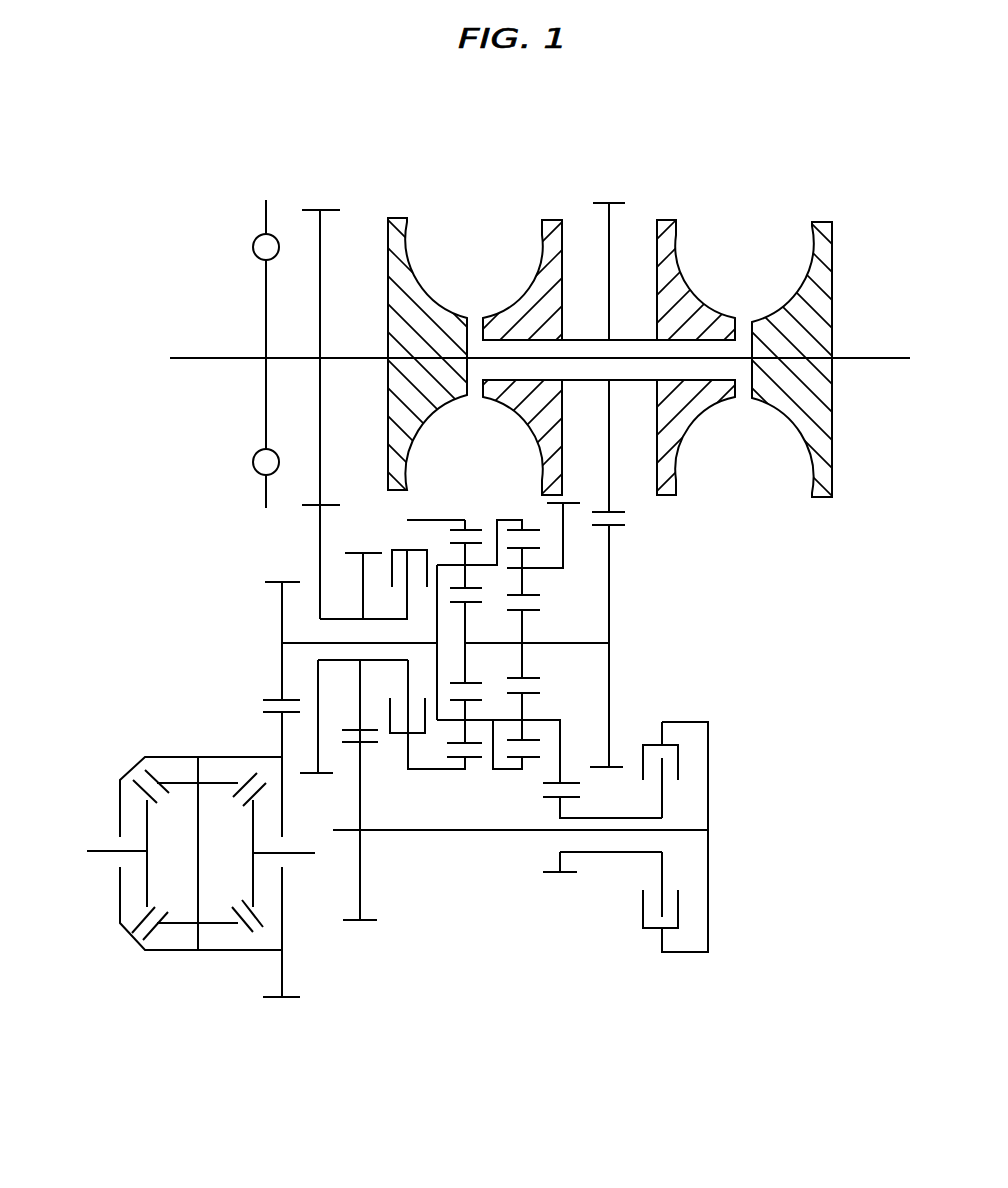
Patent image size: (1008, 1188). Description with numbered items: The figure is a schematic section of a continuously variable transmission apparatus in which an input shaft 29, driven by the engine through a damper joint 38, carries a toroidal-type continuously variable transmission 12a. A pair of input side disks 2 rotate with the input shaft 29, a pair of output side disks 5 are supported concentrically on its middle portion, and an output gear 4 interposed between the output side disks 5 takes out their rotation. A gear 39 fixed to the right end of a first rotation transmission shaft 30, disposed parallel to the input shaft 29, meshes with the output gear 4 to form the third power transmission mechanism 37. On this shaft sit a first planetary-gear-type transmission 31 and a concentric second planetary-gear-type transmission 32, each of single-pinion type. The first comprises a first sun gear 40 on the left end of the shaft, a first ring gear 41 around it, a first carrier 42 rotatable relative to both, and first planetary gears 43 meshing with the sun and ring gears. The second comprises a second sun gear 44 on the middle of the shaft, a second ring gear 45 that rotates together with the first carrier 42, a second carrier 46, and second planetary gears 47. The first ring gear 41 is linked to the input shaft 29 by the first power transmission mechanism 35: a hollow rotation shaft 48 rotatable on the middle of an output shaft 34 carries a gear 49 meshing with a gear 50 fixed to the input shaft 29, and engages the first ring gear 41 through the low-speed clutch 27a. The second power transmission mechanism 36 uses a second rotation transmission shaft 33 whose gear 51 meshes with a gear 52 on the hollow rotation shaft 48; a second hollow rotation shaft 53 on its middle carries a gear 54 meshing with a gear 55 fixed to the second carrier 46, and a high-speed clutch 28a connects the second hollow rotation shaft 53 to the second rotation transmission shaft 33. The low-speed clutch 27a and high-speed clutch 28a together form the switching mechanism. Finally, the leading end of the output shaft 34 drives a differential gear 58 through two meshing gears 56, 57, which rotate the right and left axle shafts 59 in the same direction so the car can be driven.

The input side disk 2 is at (410, 297).
The output gear 4 is at (600, 203).
The output side disk 5 is at (548, 233).
The toroidal-type continuously variable transmission 12a is at (788, 232).
The low-speed clutch 27a is at (390, 740).
The high-speed clutch 28a is at (680, 763).
The input shaft 29 is at (355, 357).
The first rotation transmission shaft 30 is at (577, 643).
The first planetary-gear-type transmission 31 is at (448, 808).
The second planetary-gear-type transmission 32 is at (520, 847).
The second rotation transmission shaft 33 is at (483, 833).
The output shaft 34 is at (302, 642).
The first power transmission mechanism 35 is at (314, 530).
The second power transmission mechanism 36 is at (710, 802).
The third power transmission mechanism 37 is at (613, 553).
The damper joint 38 is at (253, 247).
The gear 39 is at (611, 672).
The first sun gear 40 is at (466, 663).
The first ring gear 41 is at (478, 528).
The first carrier 42 is at (447, 722).
The first planetary gear 43 is at (470, 582).
The second sun gear 44 is at (524, 663).
The second ring gear 45 is at (527, 528).
The second carrier 46 is at (540, 717).
The second planetary gear 47 is at (527, 582).
The hollow rotation shaft 48 is at (341, 619).
The gear 49 is at (309, 775).
The gear 50 is at (320, 233).
The gear 51 is at (358, 922).
The gear 52 is at (373, 553).
The second hollow rotation shaft 53 is at (638, 853).
The gear 54 is at (562, 865).
The gear 55 is at (563, 772).
The gear 56 is at (281, 670).
The gear 57 is at (281, 730).
The differential gear 58 is at (178, 757).
The axle shaft 59 is at (100, 852).